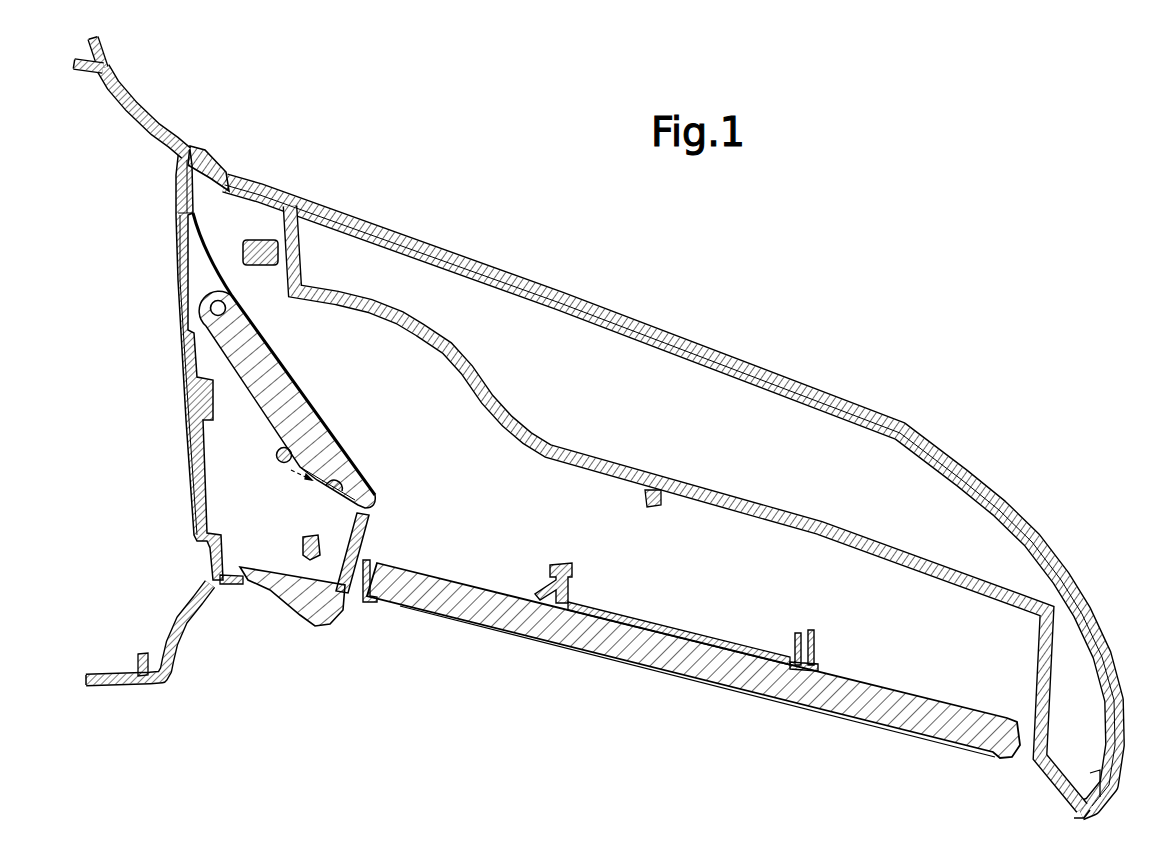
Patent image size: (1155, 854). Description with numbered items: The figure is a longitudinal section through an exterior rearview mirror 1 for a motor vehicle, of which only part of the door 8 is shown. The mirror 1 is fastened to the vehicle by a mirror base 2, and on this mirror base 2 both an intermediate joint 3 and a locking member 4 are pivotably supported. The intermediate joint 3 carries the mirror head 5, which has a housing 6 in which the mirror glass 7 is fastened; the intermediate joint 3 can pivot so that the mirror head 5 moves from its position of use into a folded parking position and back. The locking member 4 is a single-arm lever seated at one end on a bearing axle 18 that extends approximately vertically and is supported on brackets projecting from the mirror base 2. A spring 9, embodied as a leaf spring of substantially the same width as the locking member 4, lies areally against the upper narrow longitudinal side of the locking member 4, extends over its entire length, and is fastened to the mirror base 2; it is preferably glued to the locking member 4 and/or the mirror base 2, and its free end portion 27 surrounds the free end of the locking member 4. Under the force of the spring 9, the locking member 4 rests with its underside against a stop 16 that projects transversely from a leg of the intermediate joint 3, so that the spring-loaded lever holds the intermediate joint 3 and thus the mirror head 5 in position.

The exterior rearview mirror 1 is at (651, 482).
The mirror base 2 is at (187, 503).
The intermediate joint 3 is at (242, 253).
The locking member 4 is at (271, 355).
The mirror head 5 is at (476, 259).
The housing 6 is at (920, 438).
The mirror glass 7 is at (663, 667).
The door 8 is at (124, 83).
The spring 9 is at (360, 459).
The stop 16 is at (322, 420).
The bearing axle 18 is at (216, 310).
The free end portion 27 is at (370, 505).